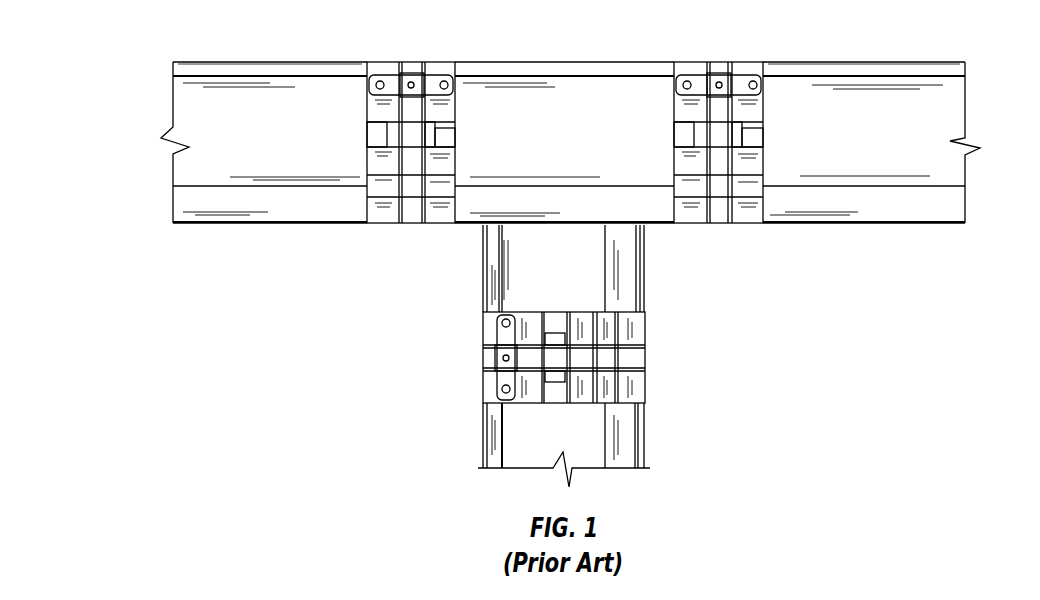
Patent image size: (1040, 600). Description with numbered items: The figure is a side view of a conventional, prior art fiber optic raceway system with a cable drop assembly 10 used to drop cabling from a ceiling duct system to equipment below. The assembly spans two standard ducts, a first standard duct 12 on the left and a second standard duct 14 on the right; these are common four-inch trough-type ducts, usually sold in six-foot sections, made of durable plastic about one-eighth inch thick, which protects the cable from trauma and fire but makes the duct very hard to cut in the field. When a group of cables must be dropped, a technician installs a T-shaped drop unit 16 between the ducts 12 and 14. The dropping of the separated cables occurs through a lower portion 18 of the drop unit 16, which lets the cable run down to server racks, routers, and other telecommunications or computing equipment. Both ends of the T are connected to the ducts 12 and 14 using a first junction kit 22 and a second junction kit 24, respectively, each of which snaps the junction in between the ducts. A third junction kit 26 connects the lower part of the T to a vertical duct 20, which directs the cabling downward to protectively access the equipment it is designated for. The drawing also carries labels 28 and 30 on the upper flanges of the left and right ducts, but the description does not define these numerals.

The cable drop assembly 10 is at (323, 347).
The first standard duct 12 is at (278, 226).
The second standard duct 14 is at (848, 226).
The drop unit 16 is at (557, 61).
The lower portion 18 is at (646, 268).
The vertical duct 20 is at (646, 445).
The first junction kit 22 is at (411, 61).
The second junction kit 24 is at (720, 61).
The third junction kit 26 is at (646, 360).
The left beam top flange 28 is at (278, 61).
The right beam top flange 30 is at (850, 61).